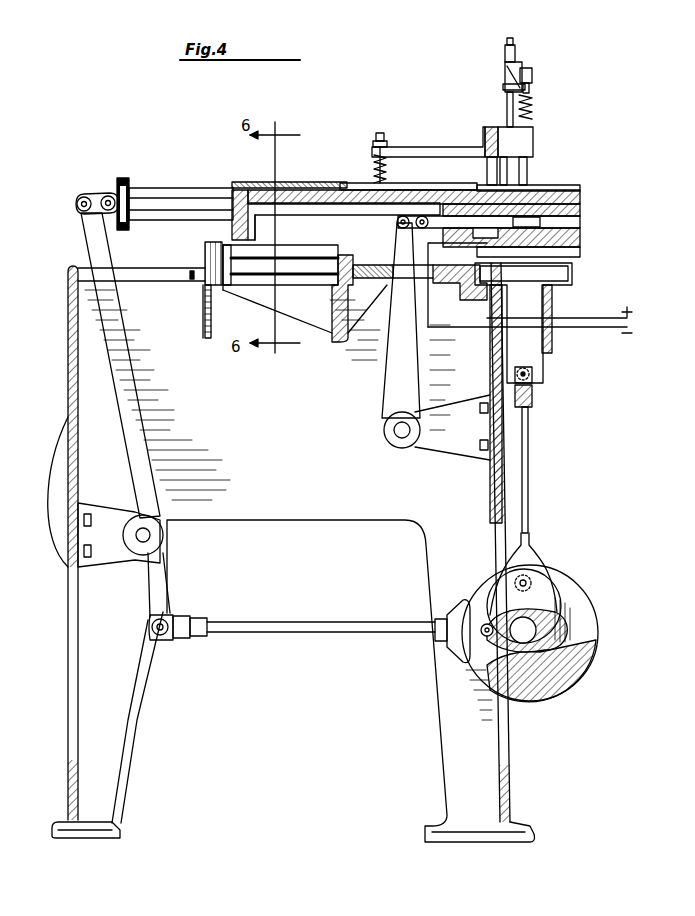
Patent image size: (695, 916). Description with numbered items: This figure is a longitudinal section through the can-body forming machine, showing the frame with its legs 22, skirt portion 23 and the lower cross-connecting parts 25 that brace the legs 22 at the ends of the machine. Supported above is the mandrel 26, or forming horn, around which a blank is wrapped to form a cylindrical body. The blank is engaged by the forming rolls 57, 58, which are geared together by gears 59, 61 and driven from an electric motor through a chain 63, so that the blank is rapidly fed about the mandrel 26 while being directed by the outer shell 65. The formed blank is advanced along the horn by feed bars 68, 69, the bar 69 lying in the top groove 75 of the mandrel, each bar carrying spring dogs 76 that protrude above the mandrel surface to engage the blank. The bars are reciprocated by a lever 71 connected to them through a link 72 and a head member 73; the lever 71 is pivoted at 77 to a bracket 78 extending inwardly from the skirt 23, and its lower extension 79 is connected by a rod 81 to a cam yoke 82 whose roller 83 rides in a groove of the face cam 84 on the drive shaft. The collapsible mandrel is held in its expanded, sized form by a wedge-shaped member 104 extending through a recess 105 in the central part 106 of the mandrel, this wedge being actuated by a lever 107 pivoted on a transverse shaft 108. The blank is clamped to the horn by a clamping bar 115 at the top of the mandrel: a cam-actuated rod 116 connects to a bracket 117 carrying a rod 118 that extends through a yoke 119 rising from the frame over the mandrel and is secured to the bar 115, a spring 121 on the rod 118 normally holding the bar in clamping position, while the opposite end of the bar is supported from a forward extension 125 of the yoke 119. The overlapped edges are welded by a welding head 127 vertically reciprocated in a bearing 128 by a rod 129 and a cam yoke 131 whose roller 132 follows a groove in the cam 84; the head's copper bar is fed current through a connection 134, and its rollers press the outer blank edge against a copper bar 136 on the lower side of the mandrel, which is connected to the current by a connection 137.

The legs 22 is at (120, 770).
The skirt portion 23 is at (68, 480).
The lower cross-connecting parts 25 is at (510, 797).
The mandrel 26 is at (240, 190).
The forming roll 57 is at (310, 285).
The forming roll 58 is at (302, 250).
The gear 59 is at (213, 292).
The gear 61 is at (213, 240).
The chain 63 is at (203, 338).
The outer shell 65 is at (305, 182).
The feed bars 68 is at (173, 219).
The feed bar 69 is at (157, 188).
The lever 71 is at (122, 343).
The link 72 is at (97, 197).
The head member 73 is at (125, 178).
The top groove 75 is at (527, 193).
The spring dogs 76 is at (353, 187).
The pivot 77 is at (143, 540).
The bracket 78 is at (107, 550).
The lower extension 79 is at (172, 592).
The rod 81 is at (303, 633).
The cam yoke 82 is at (452, 617).
The roller 83 is at (481, 634).
The face cam 84 is at (568, 680).
The wedge-shaped member 104 is at (530, 216).
The recess 105 is at (580, 225).
The central part 106 is at (580, 203).
The lever 107 is at (400, 350).
The transverse shaft 108 is at (402, 432).
The clamping bar 115 is at (405, 183).
The rod 116 is at (507, 112).
The bracket 117 is at (520, 67).
The rod 118 is at (530, 165).
The yoke 119 is at (482, 157).
The spring 121 is at (532, 107).
The forward extension 125 is at (427, 147).
The welding head 127 is at (572, 277).
The bearing 128 is at (553, 310).
The rod 129 is at (532, 477).
The cam yoke 131 is at (542, 583).
The roller 132 is at (526, 580).
The connection 134 is at (613, 318).
The copper bar 136 is at (580, 251).
The connection 137 is at (458, 325).